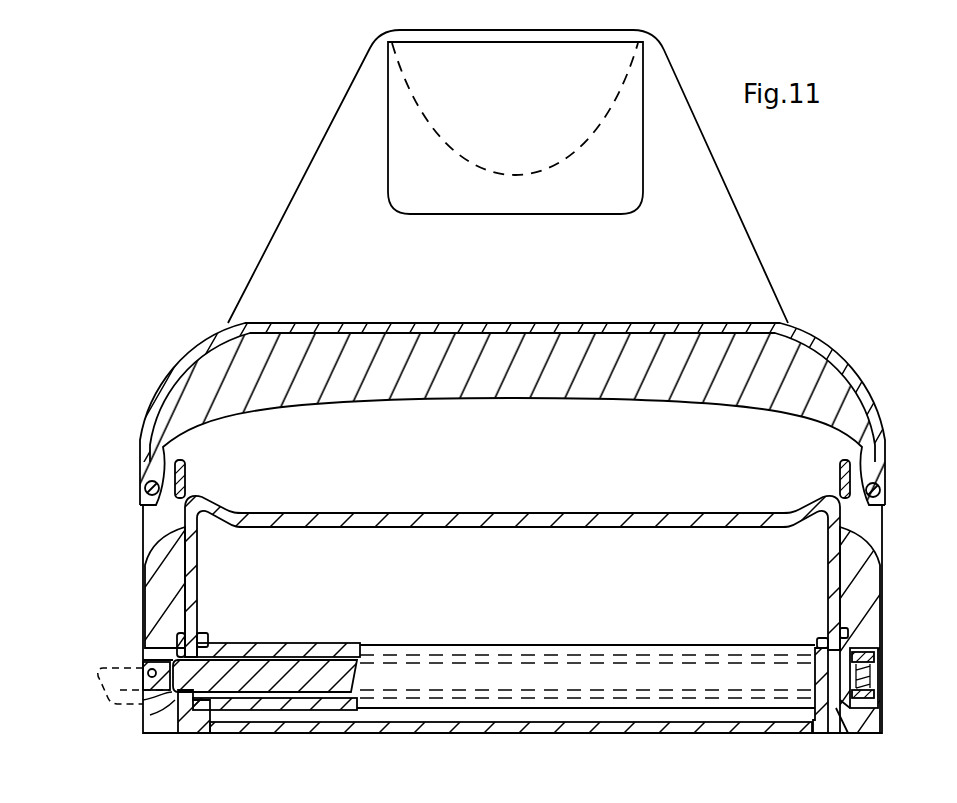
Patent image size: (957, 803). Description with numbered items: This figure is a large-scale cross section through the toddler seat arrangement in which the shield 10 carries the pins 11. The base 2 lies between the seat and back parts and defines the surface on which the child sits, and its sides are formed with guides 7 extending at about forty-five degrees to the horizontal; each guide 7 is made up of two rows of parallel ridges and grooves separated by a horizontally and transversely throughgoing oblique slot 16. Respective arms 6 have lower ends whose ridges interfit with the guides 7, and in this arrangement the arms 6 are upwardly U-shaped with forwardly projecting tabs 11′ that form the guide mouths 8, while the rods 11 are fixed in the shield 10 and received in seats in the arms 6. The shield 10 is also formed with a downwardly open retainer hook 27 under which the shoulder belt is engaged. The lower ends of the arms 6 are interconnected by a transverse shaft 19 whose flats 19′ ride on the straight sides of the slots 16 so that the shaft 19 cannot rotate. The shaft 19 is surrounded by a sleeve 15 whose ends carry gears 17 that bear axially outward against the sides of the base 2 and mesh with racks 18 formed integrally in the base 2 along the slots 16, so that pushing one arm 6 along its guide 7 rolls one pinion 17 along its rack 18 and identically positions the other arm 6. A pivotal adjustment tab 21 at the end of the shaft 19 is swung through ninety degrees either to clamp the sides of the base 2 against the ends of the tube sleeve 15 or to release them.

The base 2 is at (425, 518).
The arms 6 is at (157, 578).
The guides 7 is at (176, 633).
The guide mouths 8 is at (157, 523).
The shield 10 is at (642, 290).
The pins 11 is at (146, 482).
The tabs 11′ is at (187, 470).
The sleeve 15 is at (340, 646).
The slot 16 is at (252, 716).
The gears 17 is at (208, 634).
The racks 18 is at (218, 735).
The shaft 19 is at (283, 667).
The flats 19′ is at (253, 657).
The hinge 21 is at (108, 706).
The retainer hook 27 is at (508, 203).